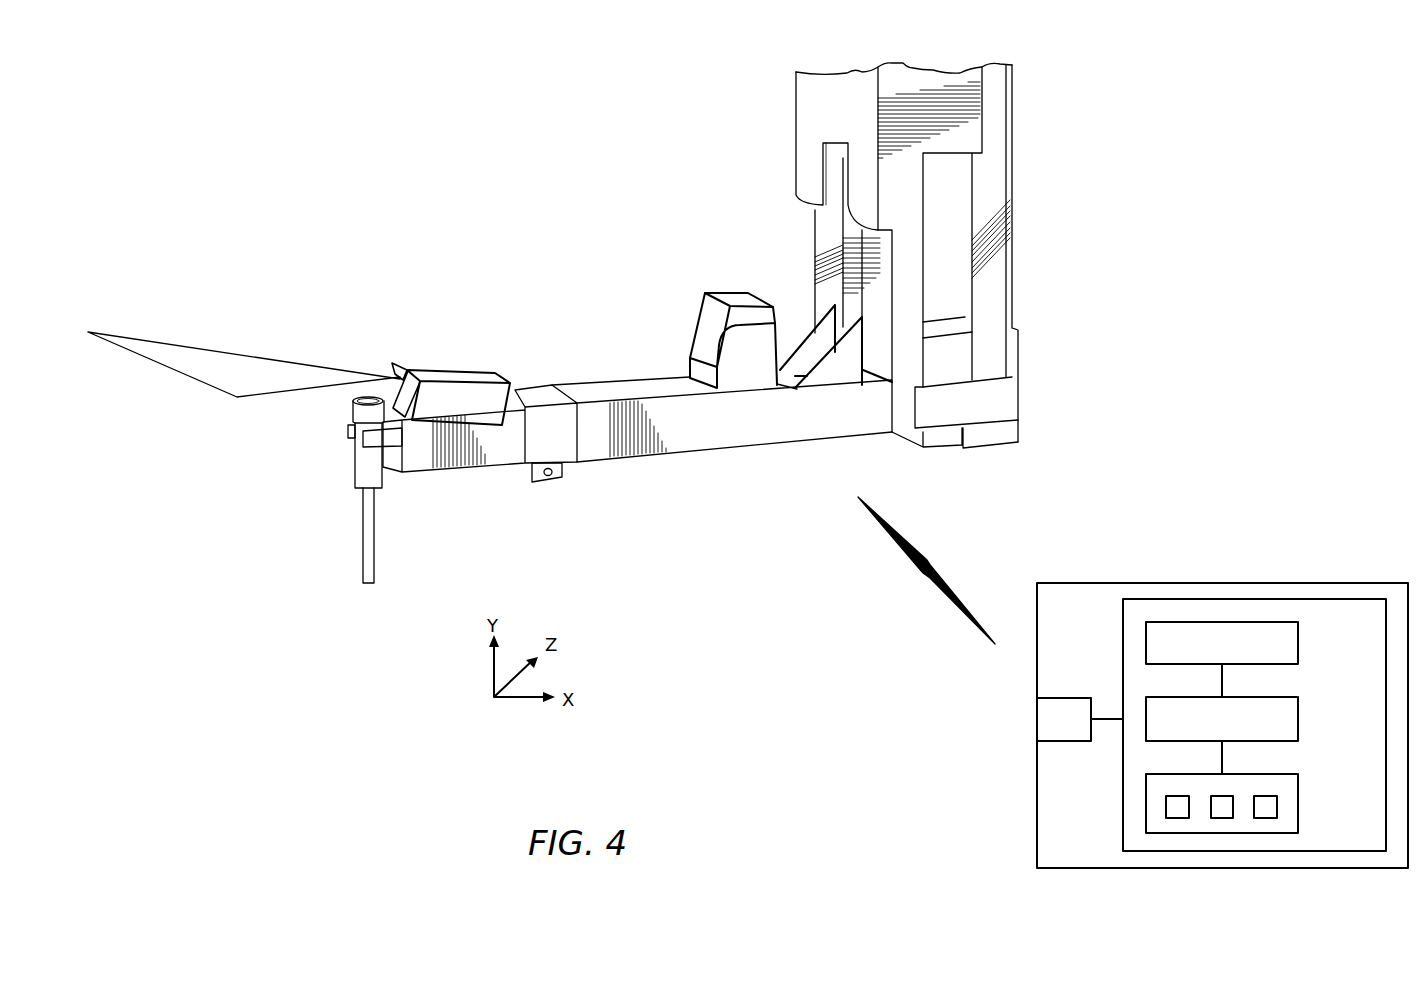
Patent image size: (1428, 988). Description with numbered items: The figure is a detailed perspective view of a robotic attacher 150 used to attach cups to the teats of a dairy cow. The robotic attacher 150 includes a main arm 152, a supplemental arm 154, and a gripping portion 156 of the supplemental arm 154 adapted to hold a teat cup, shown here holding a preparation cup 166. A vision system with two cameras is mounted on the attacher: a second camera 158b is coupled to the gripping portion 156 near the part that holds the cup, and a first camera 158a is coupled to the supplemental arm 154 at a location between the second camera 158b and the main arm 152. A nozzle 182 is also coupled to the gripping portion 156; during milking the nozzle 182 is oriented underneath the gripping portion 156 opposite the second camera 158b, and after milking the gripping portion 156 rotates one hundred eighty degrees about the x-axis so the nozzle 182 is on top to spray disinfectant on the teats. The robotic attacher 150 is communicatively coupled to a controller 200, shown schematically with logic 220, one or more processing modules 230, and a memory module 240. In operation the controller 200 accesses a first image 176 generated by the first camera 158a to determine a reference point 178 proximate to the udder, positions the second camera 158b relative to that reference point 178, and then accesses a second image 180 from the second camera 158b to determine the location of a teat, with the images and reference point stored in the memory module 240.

The robotic attacher 150 is at (526, 124).
The main arm 152 is at (808, 147).
The supplemental arm 154 is at (752, 435).
The gripping portion 156 is at (568, 486).
The first camera 158a is at (742, 292).
The second camera 158b is at (440, 367).
The preparation cup 166 is at (362, 543).
The nozzle 182 is at (563, 472).
The controller 200 is at (1274, 579).
The logic 220 is at (1300, 643).
The processing module 230 is at (1300, 718).
The memory module 240 is at (1300, 792).
The first image 176 is at (1178, 818).
The reference point 178 is at (1222, 818).
The second image 180 is at (1265, 818).